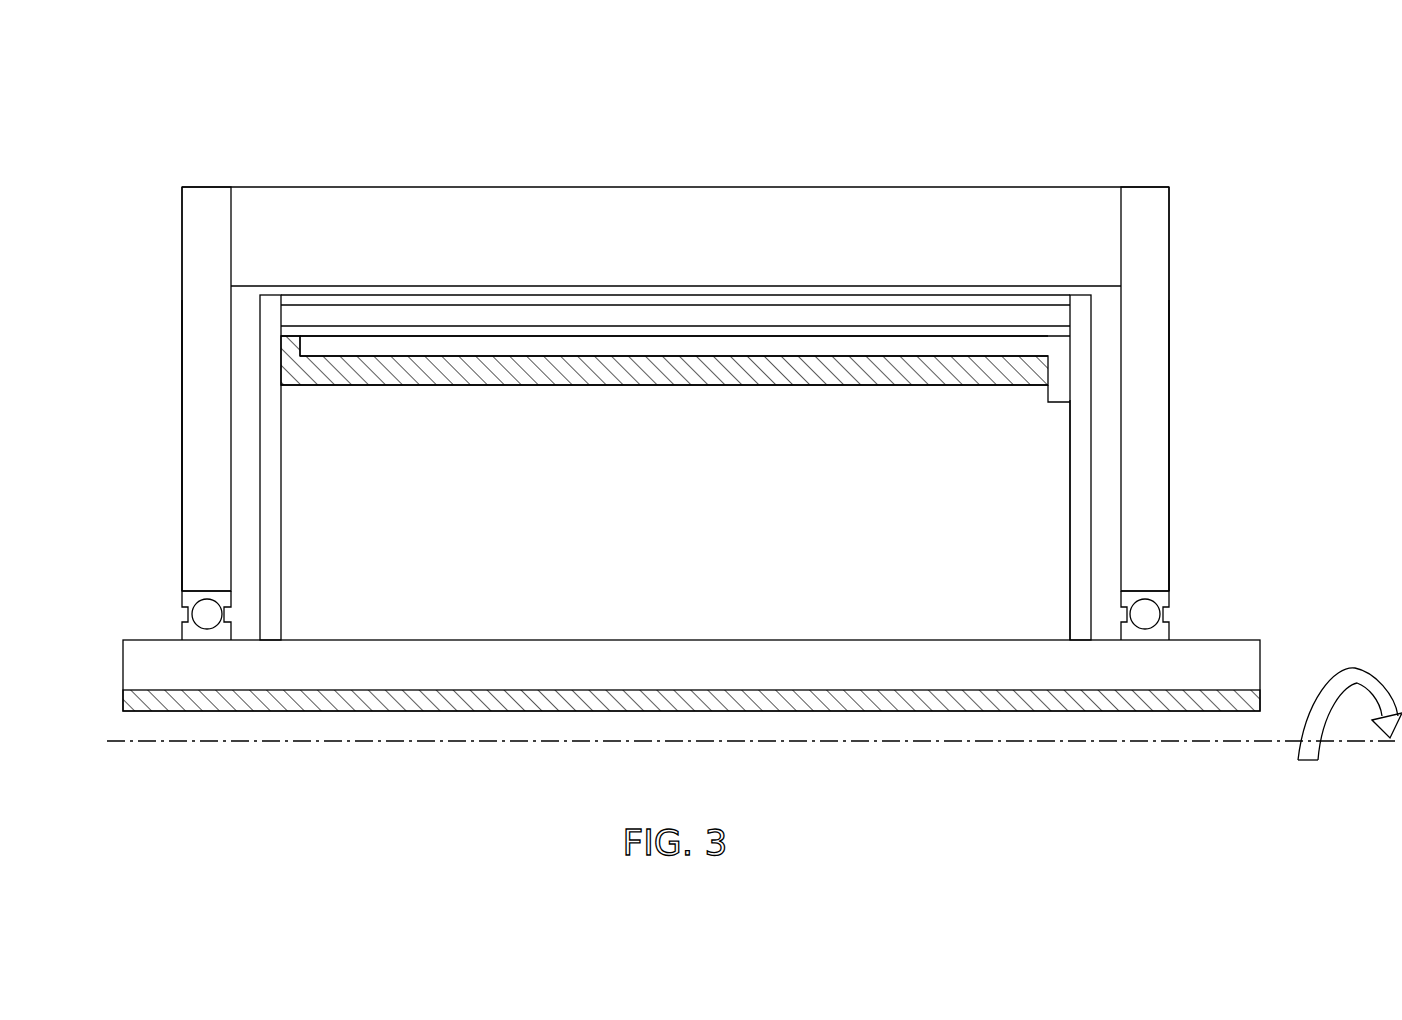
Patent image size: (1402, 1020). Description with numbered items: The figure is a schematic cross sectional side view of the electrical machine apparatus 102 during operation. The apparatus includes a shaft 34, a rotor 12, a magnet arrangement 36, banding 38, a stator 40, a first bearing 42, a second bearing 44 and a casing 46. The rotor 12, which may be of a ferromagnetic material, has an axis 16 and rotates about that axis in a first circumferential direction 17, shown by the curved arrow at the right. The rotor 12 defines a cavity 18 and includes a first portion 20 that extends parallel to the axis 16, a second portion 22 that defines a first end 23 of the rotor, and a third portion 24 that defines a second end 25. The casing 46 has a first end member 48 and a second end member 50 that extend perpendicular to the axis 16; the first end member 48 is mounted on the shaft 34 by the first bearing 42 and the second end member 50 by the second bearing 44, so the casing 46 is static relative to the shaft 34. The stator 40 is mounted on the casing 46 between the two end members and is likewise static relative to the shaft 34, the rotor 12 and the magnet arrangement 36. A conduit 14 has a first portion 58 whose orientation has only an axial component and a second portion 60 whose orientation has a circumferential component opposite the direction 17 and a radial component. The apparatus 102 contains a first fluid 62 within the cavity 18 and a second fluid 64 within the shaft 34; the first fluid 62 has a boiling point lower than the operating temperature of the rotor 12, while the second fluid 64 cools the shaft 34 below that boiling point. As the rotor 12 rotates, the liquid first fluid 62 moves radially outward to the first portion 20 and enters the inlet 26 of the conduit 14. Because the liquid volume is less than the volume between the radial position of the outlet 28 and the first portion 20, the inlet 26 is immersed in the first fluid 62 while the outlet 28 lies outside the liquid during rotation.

The electrical machine apparatus 102 is at (172, 140).
The first end 23 is at (285, 145).
The second end 25 is at (1088, 135).
The stator 40 is at (445, 230).
The casing 46 is at (182, 305).
The first end member 48 is at (193, 468).
The second end member 50 is at (1145, 482).
The first bearing 42 is at (182, 600).
The second bearing 44 is at (1170, 598).
The second portion 22 is at (270, 550).
The third portion 24 is at (1080, 543).
The rotor 12 is at (1068, 605).
The banding 38 is at (575, 303).
The magnet arrangement 36 is at (864, 315).
The first portion 20 is at (763, 330).
The conduit 14 is at (944, 345).
The first portion 58 is at (620, 343).
The first fluid 62 is at (476, 374).
The inlet 26 is at (300, 338).
The second portion 60 is at (1048, 387).
The outlet 28 is at (1065, 406).
The cavity 18 is at (693, 589).
The shaft 34 is at (142, 668).
The second fluid 64 is at (560, 703).
The axis 16 is at (318, 742).
The first circumferential direction 17 is at (1355, 668).